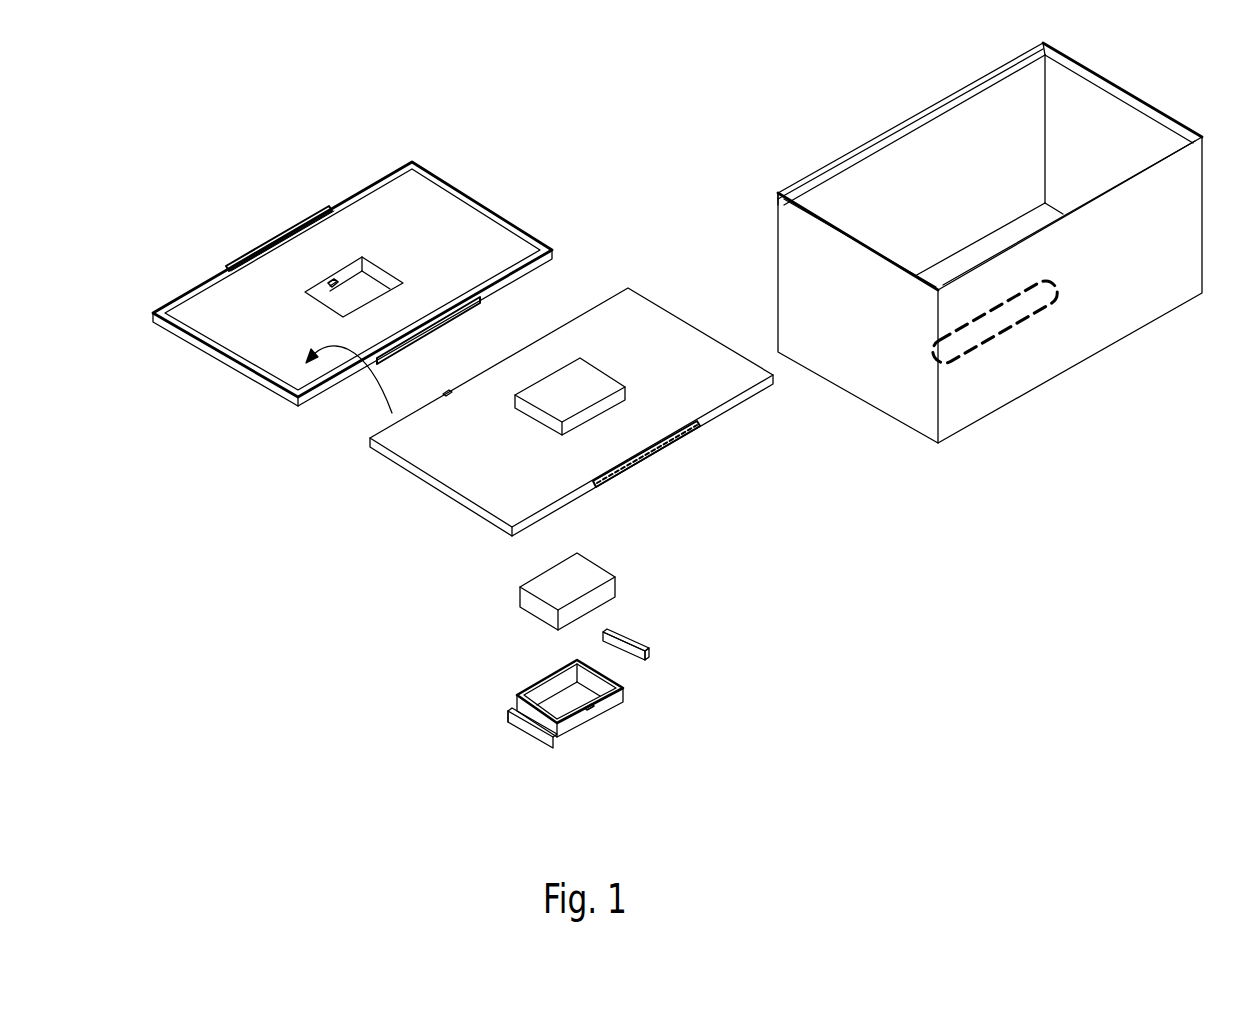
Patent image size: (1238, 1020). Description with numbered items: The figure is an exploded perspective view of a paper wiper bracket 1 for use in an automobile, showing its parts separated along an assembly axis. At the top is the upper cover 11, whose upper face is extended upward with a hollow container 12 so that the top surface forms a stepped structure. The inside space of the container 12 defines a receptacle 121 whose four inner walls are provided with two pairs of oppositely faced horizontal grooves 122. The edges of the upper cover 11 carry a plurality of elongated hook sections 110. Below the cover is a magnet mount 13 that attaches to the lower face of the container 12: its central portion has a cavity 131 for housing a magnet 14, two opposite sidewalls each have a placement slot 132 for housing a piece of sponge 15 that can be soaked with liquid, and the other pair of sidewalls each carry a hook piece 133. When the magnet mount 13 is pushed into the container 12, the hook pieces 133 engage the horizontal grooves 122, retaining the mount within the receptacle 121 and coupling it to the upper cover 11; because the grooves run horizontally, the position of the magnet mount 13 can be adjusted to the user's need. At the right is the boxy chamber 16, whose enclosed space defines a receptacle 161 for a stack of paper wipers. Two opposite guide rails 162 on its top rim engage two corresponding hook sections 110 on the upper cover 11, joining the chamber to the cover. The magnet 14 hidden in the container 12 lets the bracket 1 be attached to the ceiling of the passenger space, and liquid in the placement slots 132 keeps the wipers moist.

The paper wiper bracket 1 is at (682, 137).
The upper cover 11 is at (653, 327).
The hook sections 110 is at (288, 230).
The container 12 is at (552, 395).
The receptacle 121 is at (357, 297).
The horizontal grooves 122 is at (333, 285).
The magnet mount 13 is at (561, 714).
The cavity 131 is at (563, 703).
The placement slot 132 is at (528, 723).
The hook piece 133 is at (590, 707).
The magnet 14 is at (587, 575).
The sponge 15 is at (632, 638).
The boxy chamber 16 is at (980, 296).
The receptacle 161 is at (950, 178).
The guide rails 162 is at (962, 102).